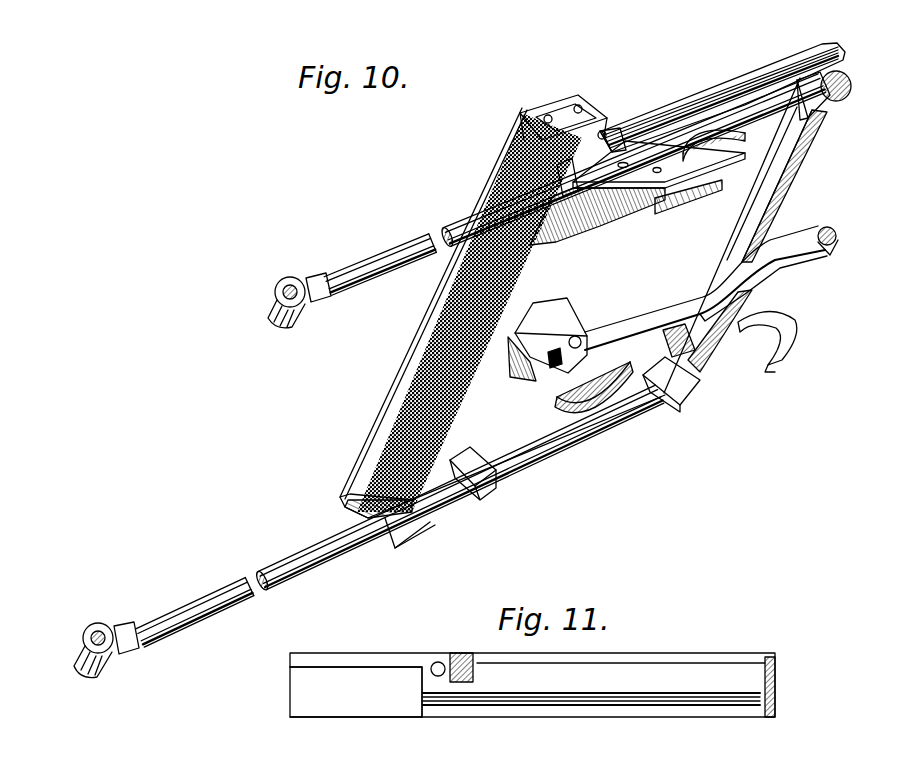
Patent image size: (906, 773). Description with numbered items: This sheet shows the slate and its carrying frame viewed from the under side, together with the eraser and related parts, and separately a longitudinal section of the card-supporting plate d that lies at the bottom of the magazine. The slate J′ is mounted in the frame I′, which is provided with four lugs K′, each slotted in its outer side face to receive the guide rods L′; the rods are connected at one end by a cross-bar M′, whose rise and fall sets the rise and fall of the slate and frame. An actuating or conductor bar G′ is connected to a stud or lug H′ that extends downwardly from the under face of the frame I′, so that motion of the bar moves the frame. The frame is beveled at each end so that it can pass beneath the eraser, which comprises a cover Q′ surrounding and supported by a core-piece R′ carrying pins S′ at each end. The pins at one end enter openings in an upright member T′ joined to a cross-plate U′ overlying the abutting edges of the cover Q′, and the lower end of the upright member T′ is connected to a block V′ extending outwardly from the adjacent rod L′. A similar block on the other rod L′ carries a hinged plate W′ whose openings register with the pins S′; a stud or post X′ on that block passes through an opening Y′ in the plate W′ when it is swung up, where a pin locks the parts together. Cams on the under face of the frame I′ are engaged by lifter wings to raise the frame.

In FIG. 10, the frame I′ is at (570, 298).
In FIG. 10, the cross-plate U′ is at (378, 442).
In FIG. 10, the upright member T′ is at (340, 503).
In FIG. 10, the block V′ is at (428, 515).
In FIG. 10, the cover Q′ is at (520, 152).
In FIG. 10, the core-piece R′ is at (566, 113).
In FIG. 10, the pins S′ is at (602, 130).
In FIG. 10, the slate J′ is at (678, 96).
In FIG. 10, the stud or post X′ is at (608, 138).
In FIG. 10, the guide rods L′ is at (420, 256).
In FIG. 10, the plate W′ is at (675, 163).
In FIG. 10, the opening Y′ is at (622, 168).
In FIG. 10, the lugs K′ is at (822, 103).
In FIG. 10, the cross-bar M′ is at (790, 163).
In FIG. 10, the actuating or conductor bar G′ is at (662, 305).
In FIG. 10, the stud or lug H′ is at (570, 322).
In FIG. 10, the hook B′ is at (760, 314).
In FIG. 10, the bracket D′ is at (770, 358).
In FIG. 10, the block A′ is at (692, 348).
In FIG. 11, the card-supporting plate or frame d is at (375, 718).